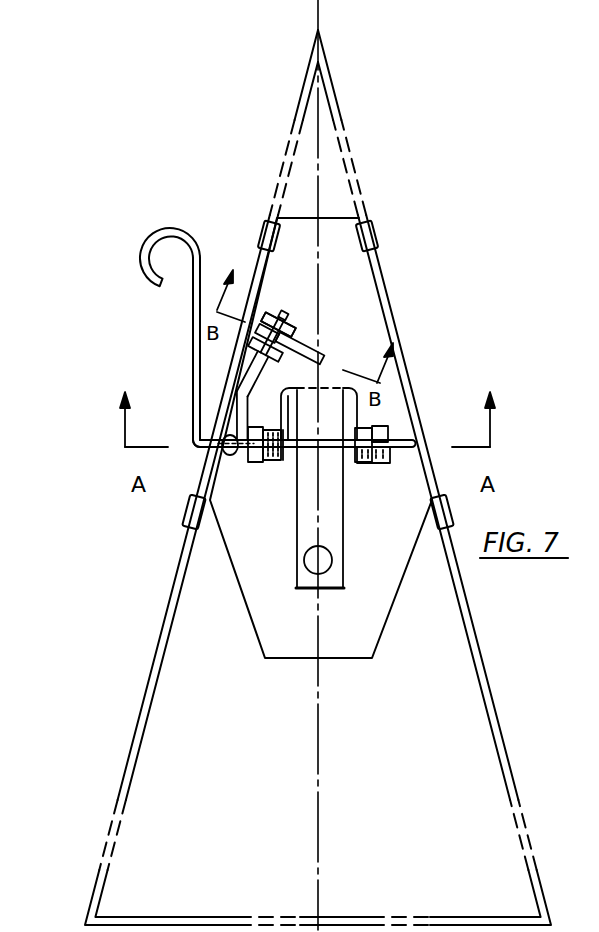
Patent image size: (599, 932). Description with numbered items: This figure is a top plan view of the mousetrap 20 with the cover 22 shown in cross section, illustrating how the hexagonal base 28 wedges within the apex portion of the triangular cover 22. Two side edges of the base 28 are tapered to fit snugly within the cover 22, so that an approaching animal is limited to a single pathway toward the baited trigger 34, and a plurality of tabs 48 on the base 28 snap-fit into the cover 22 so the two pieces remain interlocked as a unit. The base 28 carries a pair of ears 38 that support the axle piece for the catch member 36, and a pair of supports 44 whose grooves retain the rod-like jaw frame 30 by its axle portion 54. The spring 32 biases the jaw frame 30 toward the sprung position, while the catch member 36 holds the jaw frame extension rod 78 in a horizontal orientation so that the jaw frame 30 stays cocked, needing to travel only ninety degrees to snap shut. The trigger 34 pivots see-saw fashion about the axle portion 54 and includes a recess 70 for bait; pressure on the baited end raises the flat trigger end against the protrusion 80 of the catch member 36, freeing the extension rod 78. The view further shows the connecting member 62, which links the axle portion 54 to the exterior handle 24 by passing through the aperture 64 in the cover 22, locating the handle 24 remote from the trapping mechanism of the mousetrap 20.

The mousetrap 20 is at (235, 672).
The cover 22 is at (145, 690).
The handle 24 is at (190, 355).
The base 28 is at (366, 630).
The jaw frame 30 is at (350, 465).
The spring 32 is at (276, 470).
The trigger 34 is at (298, 590).
The catch member 36 is at (306, 340).
The ears 38 is at (270, 312).
The supports 44 is at (249, 465).
The tabs 48 is at (262, 223).
The axle portion 54 is at (290, 465).
The connecting member 62 is at (196, 455).
The aperture 64 is at (224, 440).
The recess 70 is at (322, 573).
The jaw frame extension rod 78 is at (290, 322).
The protrusion 80 is at (328, 339).